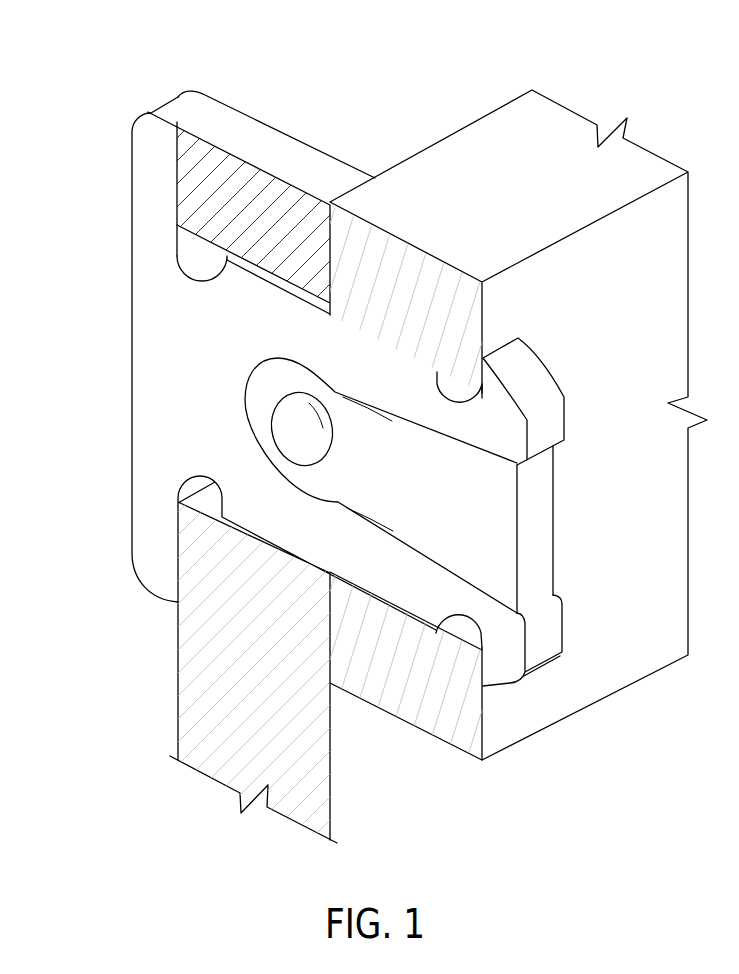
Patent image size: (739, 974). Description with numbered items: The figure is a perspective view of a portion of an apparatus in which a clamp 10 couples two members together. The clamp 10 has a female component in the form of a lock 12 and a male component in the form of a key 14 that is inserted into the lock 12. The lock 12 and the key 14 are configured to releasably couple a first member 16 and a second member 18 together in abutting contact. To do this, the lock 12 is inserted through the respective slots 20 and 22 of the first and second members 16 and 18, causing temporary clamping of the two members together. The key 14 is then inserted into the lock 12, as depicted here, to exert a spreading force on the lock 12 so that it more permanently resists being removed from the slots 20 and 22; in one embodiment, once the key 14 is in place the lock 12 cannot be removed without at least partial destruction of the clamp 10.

The clamp 10 is at (126, 73).
The lock 12 is at (132, 328).
The key 14 is at (555, 489).
The first member 16 is at (295, 133).
The second member 18 is at (534, 735).
The slot 20 is at (184, 262).
The slot 22 is at (448, 640).